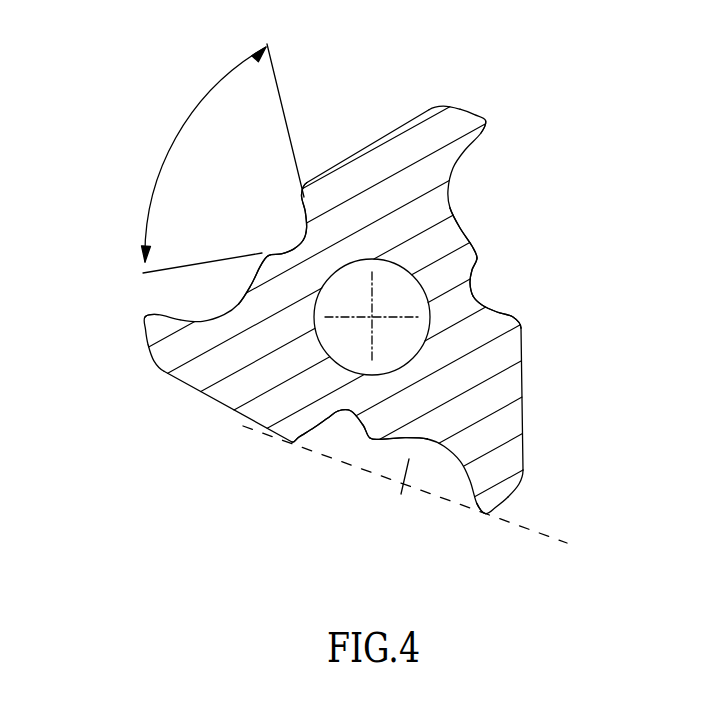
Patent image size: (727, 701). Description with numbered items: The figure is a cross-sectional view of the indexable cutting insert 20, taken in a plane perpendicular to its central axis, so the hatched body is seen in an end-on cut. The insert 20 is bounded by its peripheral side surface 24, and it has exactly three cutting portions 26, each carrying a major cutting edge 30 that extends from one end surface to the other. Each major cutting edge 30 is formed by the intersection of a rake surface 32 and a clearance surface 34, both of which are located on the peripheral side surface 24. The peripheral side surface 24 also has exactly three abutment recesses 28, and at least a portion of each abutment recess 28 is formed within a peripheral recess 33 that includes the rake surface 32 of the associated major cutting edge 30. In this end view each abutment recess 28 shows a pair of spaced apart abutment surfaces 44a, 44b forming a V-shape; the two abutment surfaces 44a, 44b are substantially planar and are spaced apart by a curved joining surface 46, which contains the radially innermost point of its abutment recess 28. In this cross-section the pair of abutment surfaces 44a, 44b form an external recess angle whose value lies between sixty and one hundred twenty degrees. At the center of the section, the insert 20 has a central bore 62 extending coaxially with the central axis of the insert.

The cutting insert 20 is at (349, 132).
The peripheral side surface 24 is at (525, 412).
The cutting portions 26 is at (168, 337).
The abutment recesses 28 is at (281, 235).
The major cutting edge 30 is at (143, 318).
The rake surface 32 is at (160, 317).
The peripheral recess 33 is at (405, 484).
The clearance surface 34 is at (143, 338).
The abutment surface 44a is at (302, 200).
The abutment surface 44b is at (278, 252).
The curved joining surface 46 is at (304, 222).
The central bore 62 is at (403, 288).